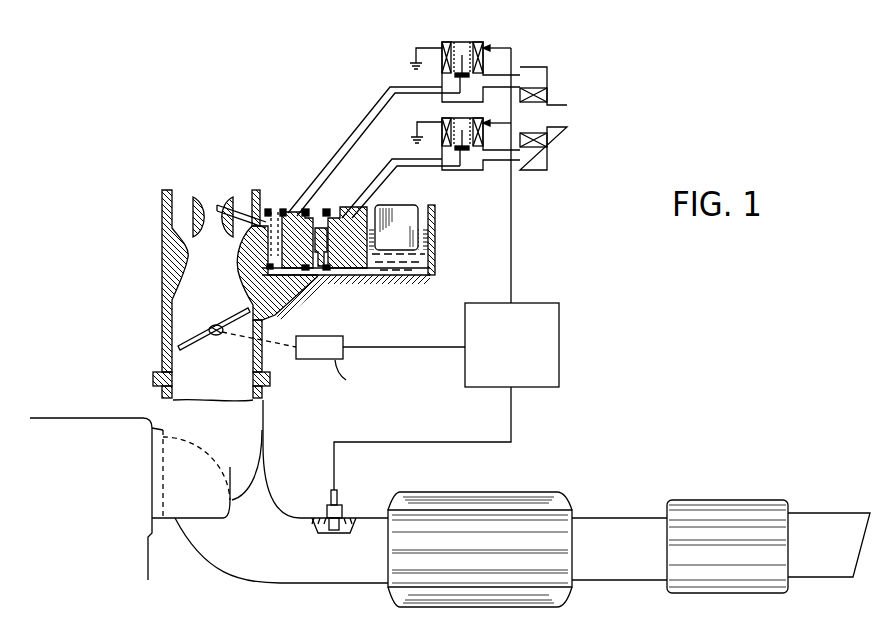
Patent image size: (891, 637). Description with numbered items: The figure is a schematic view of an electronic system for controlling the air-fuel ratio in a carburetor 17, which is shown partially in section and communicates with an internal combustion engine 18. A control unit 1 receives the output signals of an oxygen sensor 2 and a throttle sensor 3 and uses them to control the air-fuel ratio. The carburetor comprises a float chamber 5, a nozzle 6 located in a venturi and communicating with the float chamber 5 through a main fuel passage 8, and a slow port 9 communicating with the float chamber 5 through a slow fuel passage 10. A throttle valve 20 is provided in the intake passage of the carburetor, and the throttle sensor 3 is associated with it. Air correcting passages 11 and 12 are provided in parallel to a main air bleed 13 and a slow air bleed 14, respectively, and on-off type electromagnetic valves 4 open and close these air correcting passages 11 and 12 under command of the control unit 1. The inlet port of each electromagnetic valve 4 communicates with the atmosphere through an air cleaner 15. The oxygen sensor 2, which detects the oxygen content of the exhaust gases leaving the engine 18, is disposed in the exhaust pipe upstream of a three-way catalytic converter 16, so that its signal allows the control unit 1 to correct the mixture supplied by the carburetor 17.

The control unit 1 is at (543, 303).
The oxygen sensor 2 is at (341, 512).
The throttle sensor 3 is at (334, 362).
The on-off type electromagnetic valve 4 is at (450, 41).
The float chamber 5 is at (415, 266).
The nozzle 6 is at (221, 204).
The main fuel passage 8 is at (253, 298).
The slow port 9 is at (251, 318).
The slow fuel passage 10 is at (307, 292).
The air correcting passage 11 is at (344, 139).
The air correcting passage 12 is at (382, 171).
The main air bleed 13 is at (280, 212).
The slow air bleed 14 is at (335, 210).
The air cleaner 15 is at (546, 76).
The three-way catalytic converter 16 is at (556, 508).
The carburetor 17 is at (267, 190).
The internal combustion engine 18 is at (93, 458).
The throttle valve 20 is at (181, 344).